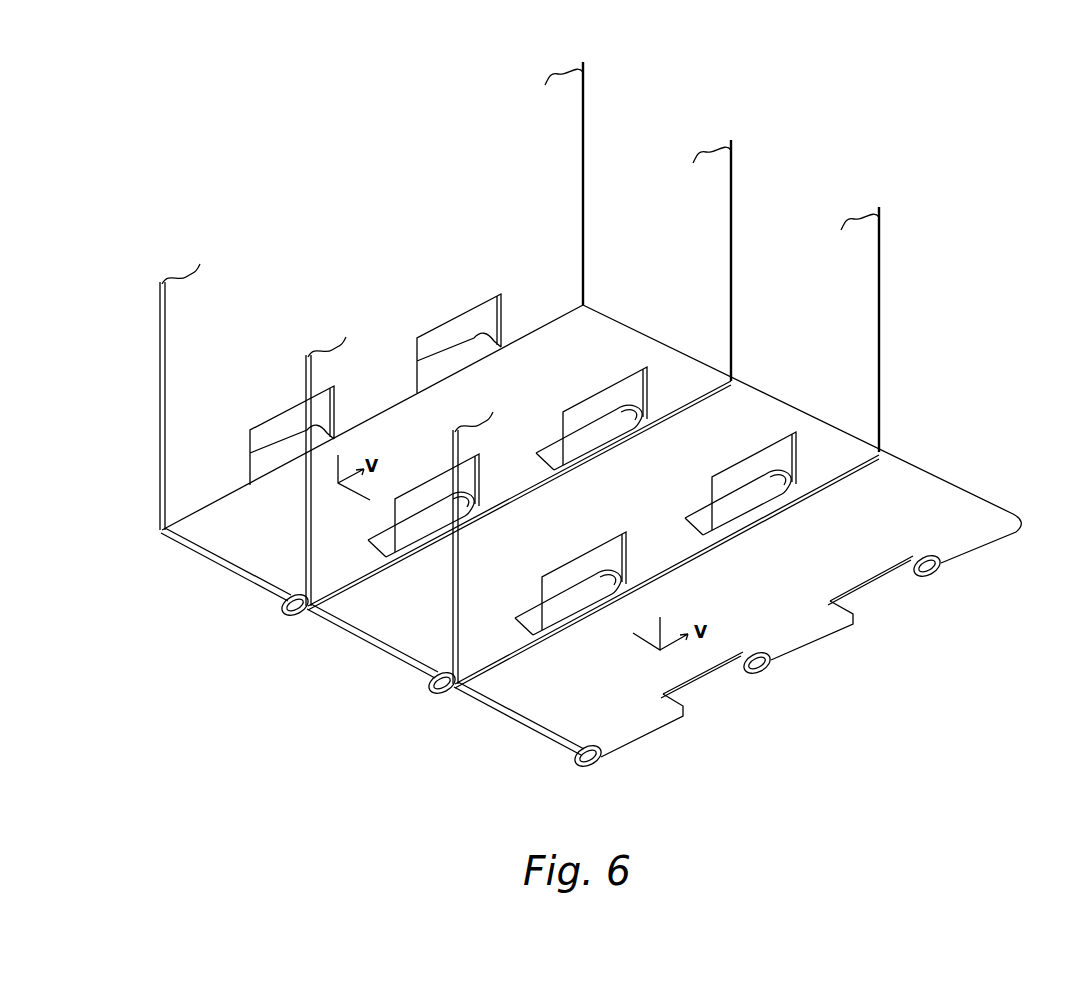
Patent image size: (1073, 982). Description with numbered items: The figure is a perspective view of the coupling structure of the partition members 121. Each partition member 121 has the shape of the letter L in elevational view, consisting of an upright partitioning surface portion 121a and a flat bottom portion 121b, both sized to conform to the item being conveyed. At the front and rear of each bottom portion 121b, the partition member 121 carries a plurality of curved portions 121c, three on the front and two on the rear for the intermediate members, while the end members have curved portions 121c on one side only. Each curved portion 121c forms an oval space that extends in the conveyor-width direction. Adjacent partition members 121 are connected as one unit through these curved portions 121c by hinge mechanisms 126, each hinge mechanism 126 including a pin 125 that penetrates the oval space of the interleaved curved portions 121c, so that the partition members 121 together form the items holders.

The partition member 121 is at (585, 118).
The partitioning surface portion 121a is at (579, 180).
The bottom portion 121b is at (638, 331).
The curved portion 121c is at (422, 367).
The pin 125 is at (610, 441).
The hinge mechanism 126 is at (551, 484).